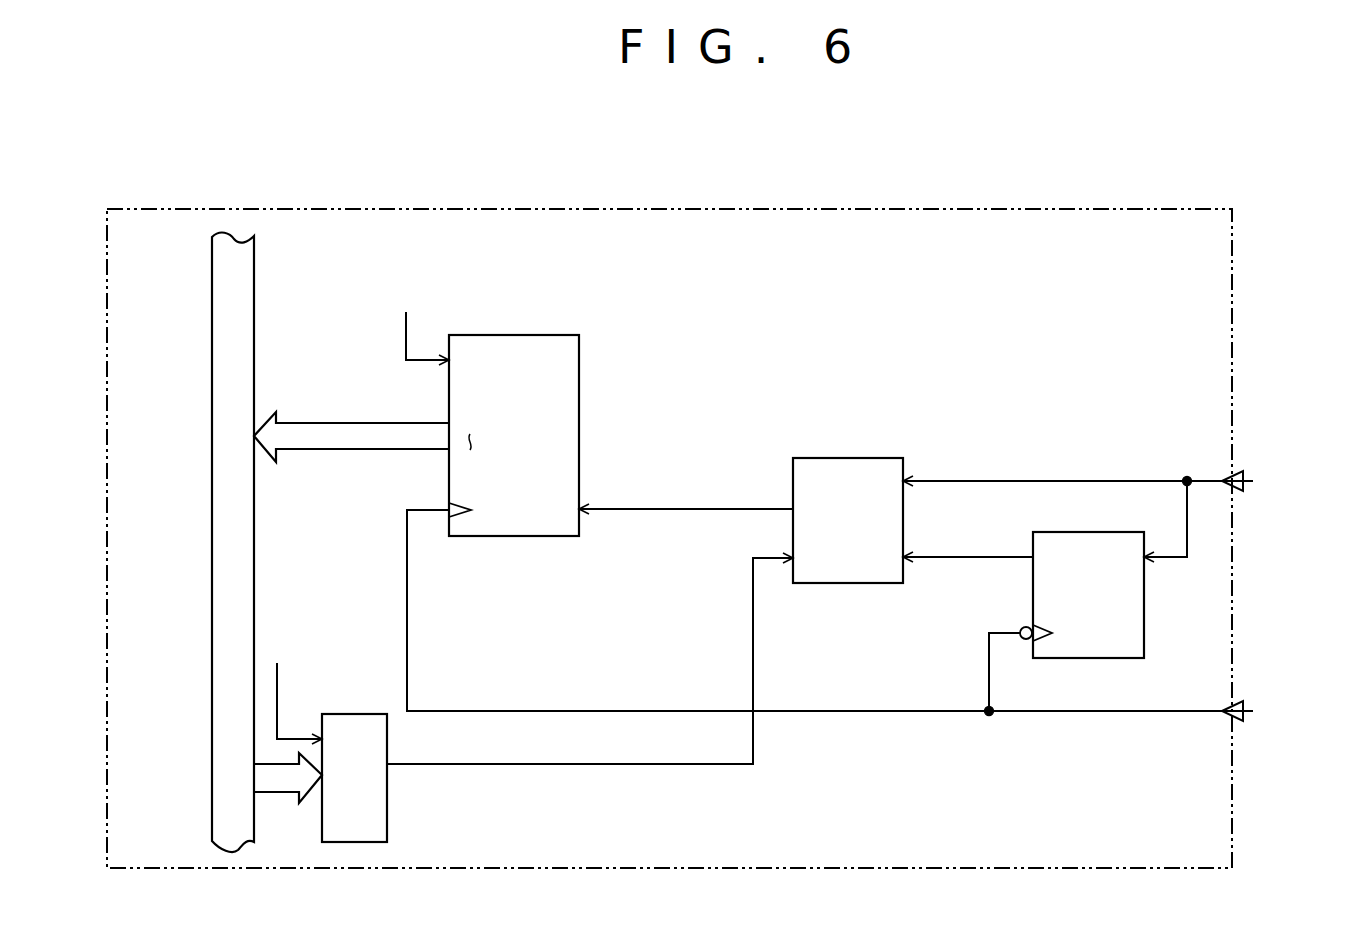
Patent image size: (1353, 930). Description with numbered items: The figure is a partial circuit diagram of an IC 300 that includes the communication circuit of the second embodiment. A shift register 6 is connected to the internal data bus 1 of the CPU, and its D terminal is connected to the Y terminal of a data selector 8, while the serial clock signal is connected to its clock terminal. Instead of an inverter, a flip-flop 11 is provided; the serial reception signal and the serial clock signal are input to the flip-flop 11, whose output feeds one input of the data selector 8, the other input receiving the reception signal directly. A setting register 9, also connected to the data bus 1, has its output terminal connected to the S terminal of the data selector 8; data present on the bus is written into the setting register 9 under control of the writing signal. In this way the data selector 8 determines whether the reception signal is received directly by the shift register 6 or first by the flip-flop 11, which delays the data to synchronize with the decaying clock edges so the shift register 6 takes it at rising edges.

The internal data bus 1 is at (226, 511).
The shift register 6 is at (540, 336).
The data selector 8 is at (862, 458).
The setting register 9 is at (369, 714).
The flip-flop 11 is at (1099, 532).
The IC 300 is at (880, 209).